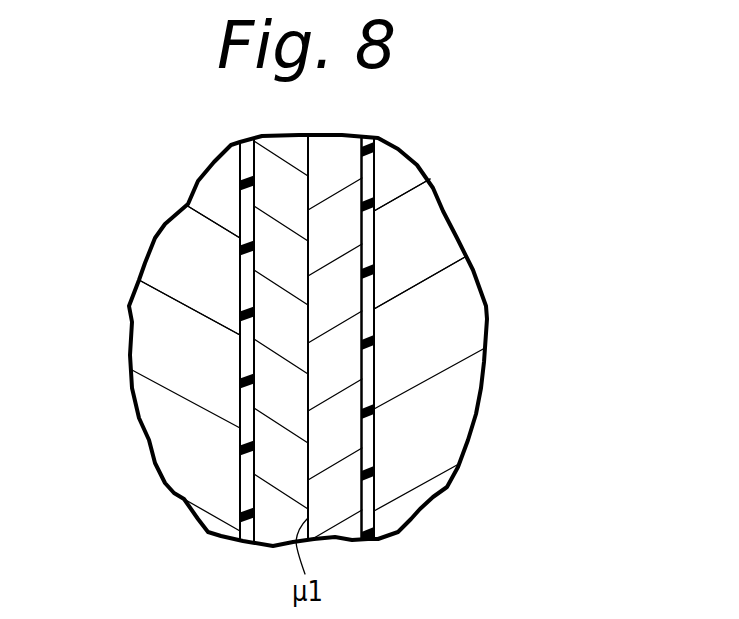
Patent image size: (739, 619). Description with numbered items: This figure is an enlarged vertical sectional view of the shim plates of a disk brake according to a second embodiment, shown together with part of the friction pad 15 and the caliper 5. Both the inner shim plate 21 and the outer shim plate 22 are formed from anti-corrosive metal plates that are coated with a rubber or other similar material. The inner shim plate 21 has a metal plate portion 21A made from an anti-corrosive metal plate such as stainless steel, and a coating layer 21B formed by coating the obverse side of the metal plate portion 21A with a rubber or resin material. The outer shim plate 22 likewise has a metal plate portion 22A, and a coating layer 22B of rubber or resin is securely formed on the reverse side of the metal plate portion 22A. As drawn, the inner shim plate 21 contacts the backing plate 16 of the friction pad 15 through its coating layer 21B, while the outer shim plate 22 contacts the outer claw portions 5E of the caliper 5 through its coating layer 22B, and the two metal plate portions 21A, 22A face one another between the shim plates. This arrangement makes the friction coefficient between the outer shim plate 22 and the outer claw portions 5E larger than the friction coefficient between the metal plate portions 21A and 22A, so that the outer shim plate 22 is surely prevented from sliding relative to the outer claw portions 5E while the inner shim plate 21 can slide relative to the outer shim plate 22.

The backing plate 16 is at (161, 247).
The friction pad 15 is at (161, 247).
The inner shim plate 21 is at (221, 353).
The metal plate portion 21A is at (243, 283).
The coating layer 21B is at (240, 415).
The caliper 5 is at (429, 234).
The outer claw portions 5E is at (429, 234).
The outer shim plate 22 is at (378, 319).
The metal plate portion 22A is at (334, 494).
The coating layer 22B is at (362, 436).